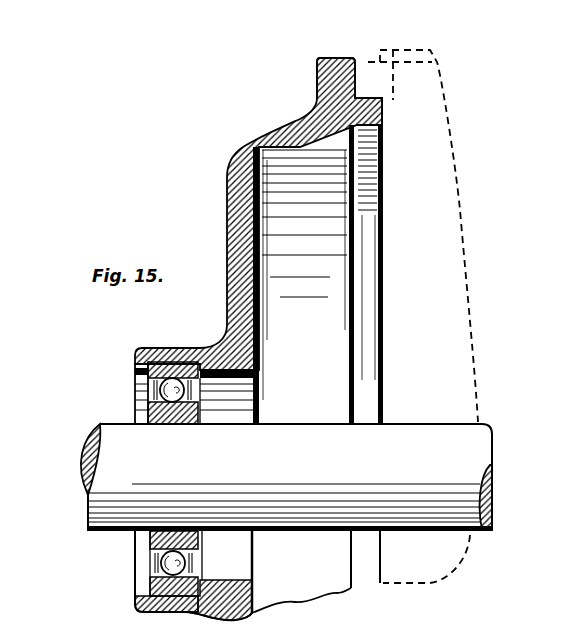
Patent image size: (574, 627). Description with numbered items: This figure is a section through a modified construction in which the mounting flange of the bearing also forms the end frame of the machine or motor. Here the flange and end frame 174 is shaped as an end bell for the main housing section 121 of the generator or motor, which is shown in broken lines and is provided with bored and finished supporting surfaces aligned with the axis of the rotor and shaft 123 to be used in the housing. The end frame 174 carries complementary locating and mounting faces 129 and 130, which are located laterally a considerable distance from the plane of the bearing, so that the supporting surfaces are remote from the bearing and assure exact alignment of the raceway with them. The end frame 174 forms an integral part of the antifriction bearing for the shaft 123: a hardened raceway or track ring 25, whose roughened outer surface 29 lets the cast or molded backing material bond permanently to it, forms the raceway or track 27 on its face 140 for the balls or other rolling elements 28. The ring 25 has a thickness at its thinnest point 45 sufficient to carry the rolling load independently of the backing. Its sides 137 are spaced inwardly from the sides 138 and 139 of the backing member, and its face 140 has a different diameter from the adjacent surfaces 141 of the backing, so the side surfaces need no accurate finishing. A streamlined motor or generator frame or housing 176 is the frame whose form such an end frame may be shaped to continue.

The flange and end frame 174 is at (247, 160).
The locating and mounting face 130 is at (365, 58).
The locating and mounting face 129 is at (370, 98).
The main housing section 121 is at (370, 60).
The motor or generator frame or housing 176 is at (366, 376).
The shaft 123 is at (107, 483).
The raceway or track ring 25 is at (163, 360).
The knurled or roughened surface 29 is at (180, 353).
The adjacent surfaces of the backing member 141 is at (147, 381).
The face of the insert ring 140 is at (152, 390).
The raceway or track 27 is at (163, 412).
The balls or other rolling elements 28 is at (175, 424).
The thinnest point of the insert ring 45 is at (168, 607).
The side of the backing member 138 is at (135, 560).
The sides of the insert ring 137 is at (150, 572).
The side of the backing member 139 is at (258, 572).